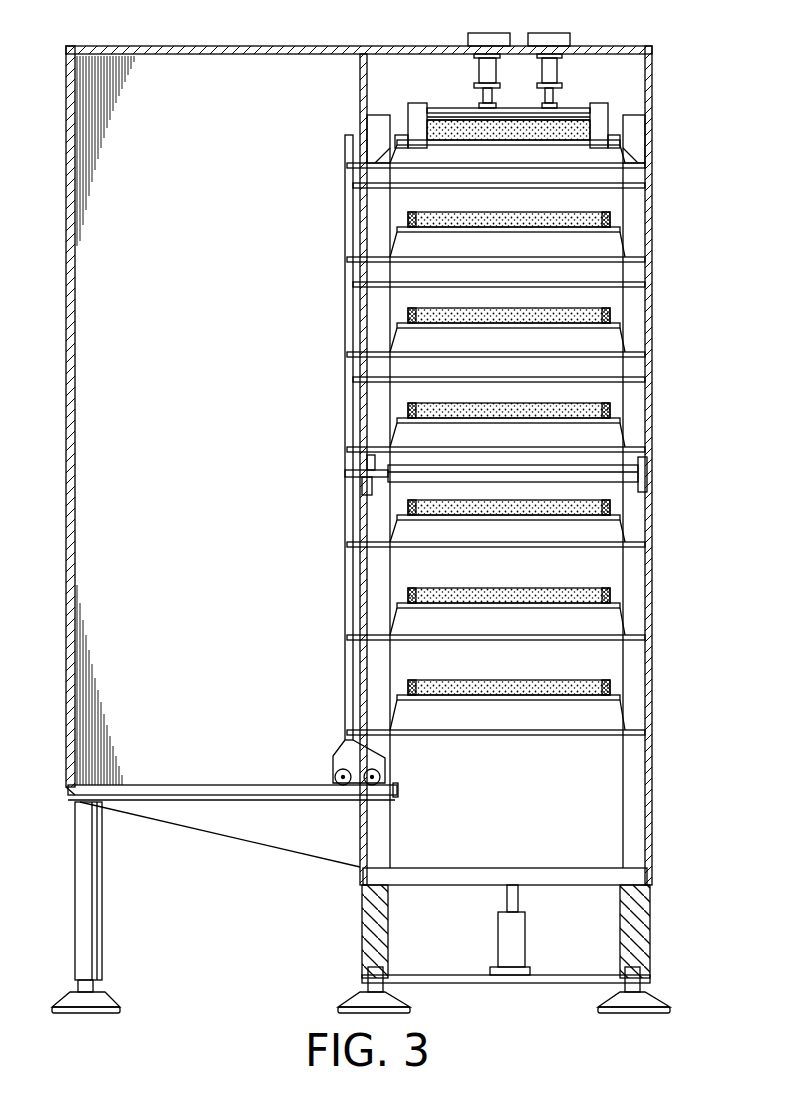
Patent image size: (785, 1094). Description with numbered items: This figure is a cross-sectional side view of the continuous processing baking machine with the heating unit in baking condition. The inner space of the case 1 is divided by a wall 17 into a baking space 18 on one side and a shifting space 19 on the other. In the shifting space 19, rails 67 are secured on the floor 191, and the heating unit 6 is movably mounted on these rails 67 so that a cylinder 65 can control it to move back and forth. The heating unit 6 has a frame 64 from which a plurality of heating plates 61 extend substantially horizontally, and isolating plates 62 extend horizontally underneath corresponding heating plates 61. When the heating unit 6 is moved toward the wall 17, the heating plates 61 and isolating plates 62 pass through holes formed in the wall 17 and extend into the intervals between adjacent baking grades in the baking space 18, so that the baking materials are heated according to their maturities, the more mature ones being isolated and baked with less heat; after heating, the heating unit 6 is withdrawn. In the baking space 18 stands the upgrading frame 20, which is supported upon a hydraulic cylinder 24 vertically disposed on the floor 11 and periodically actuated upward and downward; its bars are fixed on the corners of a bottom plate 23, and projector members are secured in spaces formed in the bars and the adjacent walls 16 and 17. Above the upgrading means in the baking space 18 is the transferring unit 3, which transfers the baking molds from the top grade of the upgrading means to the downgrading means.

The case 1 is at (139, 46).
The transferring unit 3 is at (515, 83).
The wall 16 is at (652, 97).
The wall 17 is at (360, 93).
The baking space 18 is at (623, 82).
The shifting space 19 is at (110, 88).
The upgrading frame 20 is at (603, 570).
The heating unit 6 is at (345, 453).
The heating plates 61 is at (622, 259).
The isolating plates 62 is at (616, 285).
The frame 64 is at (350, 393).
The cylinder 65 is at (606, 475).
The rails 67 is at (253, 788).
The floor 191 is at (168, 796).
The bottom plate 23 is at (465, 875).
The hydraulic cylinder 24 is at (515, 931).
The floor 11 is at (443, 983).